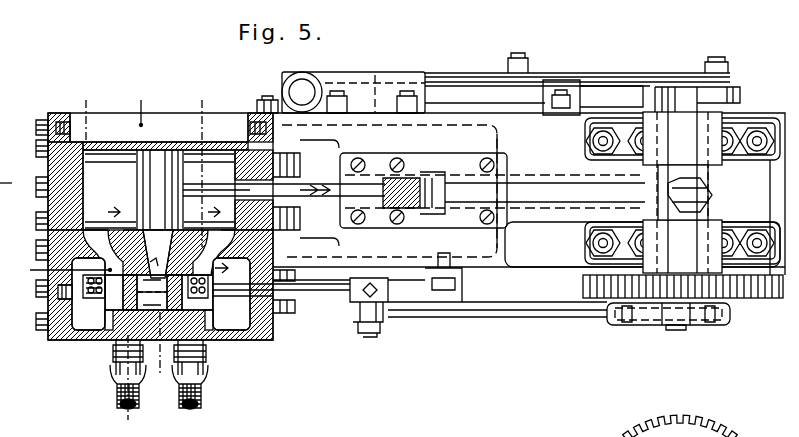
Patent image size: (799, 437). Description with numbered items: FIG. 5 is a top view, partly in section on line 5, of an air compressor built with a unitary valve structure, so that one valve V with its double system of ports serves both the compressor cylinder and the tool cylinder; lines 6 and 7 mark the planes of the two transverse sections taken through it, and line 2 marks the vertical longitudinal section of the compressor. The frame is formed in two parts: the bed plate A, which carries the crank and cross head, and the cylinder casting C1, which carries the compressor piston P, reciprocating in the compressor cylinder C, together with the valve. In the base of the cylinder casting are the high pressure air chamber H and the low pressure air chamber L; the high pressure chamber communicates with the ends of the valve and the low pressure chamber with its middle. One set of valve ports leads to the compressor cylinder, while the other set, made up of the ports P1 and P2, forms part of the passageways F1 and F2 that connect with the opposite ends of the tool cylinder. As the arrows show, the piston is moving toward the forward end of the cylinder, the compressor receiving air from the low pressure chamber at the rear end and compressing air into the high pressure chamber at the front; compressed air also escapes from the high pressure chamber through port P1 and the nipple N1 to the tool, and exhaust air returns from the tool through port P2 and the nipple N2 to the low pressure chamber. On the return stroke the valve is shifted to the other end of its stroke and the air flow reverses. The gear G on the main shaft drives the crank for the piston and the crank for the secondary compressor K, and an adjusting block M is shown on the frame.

The section line 6- 6 is at (106, 259).
The section line 7- 7 is at (180, 237).
The section line 5- 5 is at (12, 185).
The section line 2- 2 is at (5, 132).
The cylinder casting C1 is at (143, 104).
The compressor cylinder C is at (159, 190).
The compressor piston P is at (261, 190).
The secondary compressor K is at (407, 88).
The valve V is at (62, 281).
The low pressure air chamber L is at (158, 254).
The high pressure air chamber H is at (172, 294).
The port P2 is at (112, 352).
The nipple N2 is at (114, 380).
The passageway F2 is at (118, 405).
The port P1 is at (206, 350).
The nipple N1 is at (204, 380).
The passageway F1 is at (200, 405).
The bed plate A is at (528, 194).
The adjusting block M is at (682, 330).
The gear G is at (765, 288).